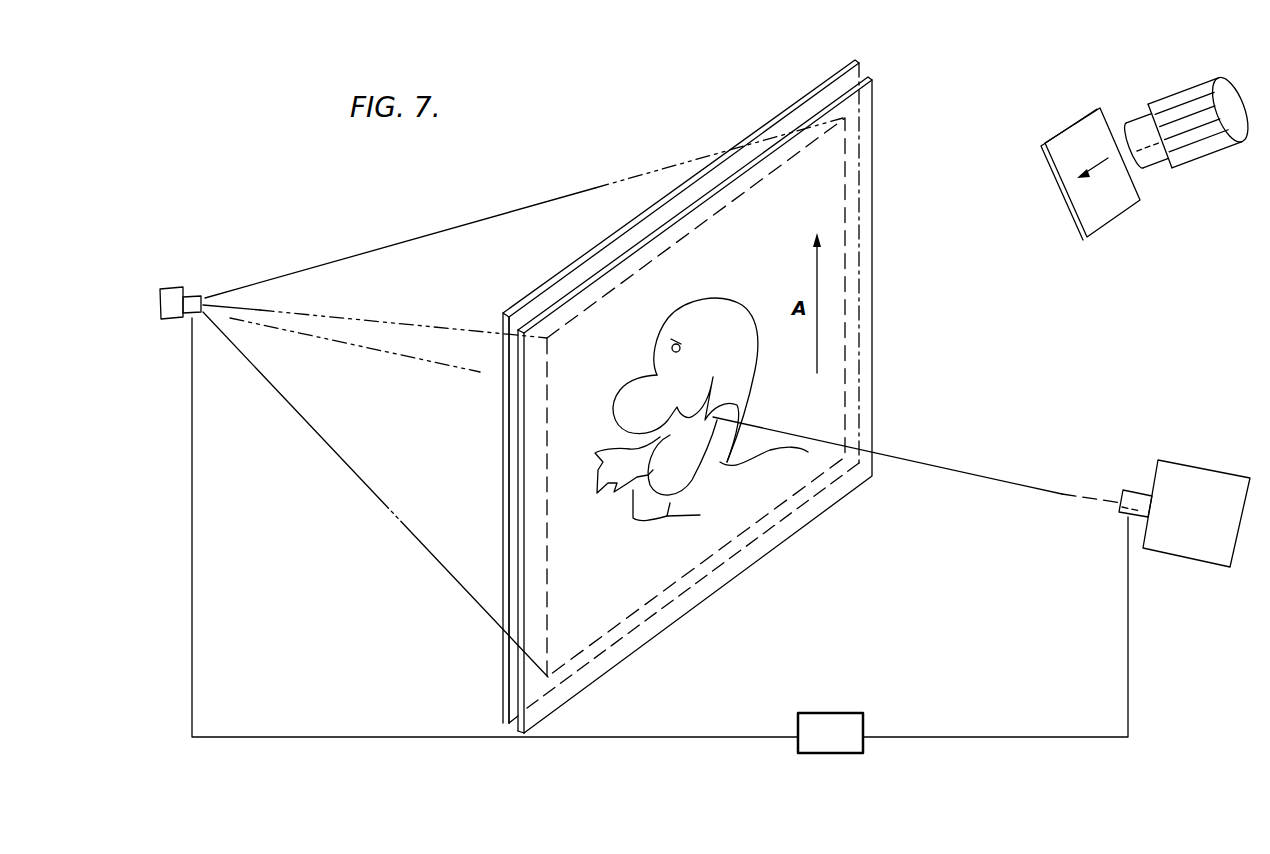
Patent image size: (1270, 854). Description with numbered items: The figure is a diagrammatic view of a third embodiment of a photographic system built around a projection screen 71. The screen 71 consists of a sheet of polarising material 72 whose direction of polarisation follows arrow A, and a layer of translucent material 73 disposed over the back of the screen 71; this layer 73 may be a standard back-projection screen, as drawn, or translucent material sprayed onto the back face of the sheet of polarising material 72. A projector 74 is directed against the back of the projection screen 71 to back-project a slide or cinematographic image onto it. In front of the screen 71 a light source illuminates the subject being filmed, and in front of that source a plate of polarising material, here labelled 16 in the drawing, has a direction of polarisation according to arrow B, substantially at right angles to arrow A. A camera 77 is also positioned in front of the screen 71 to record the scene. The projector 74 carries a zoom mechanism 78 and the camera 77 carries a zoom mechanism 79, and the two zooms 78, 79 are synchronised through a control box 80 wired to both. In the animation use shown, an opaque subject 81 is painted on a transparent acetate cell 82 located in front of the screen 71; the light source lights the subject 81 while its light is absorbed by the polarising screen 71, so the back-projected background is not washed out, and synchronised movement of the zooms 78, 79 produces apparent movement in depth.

The projection screen 71 is at (866, 65).
The sheet of polarising material 72 is at (763, 545).
The layer of translucent material 73 is at (510, 685).
The projector 74 is at (173, 288).
The card 16 is at (1070, 128).
The camera 77 is at (1208, 475).
The zoom mechanism 78 is at (195, 292).
The zoom mechanism 79 is at (1140, 492).
The control box 80 is at (842, 745).
The opaque subject 81 is at (670, 505).
The transparent acetate cell 82 is at (575, 640).